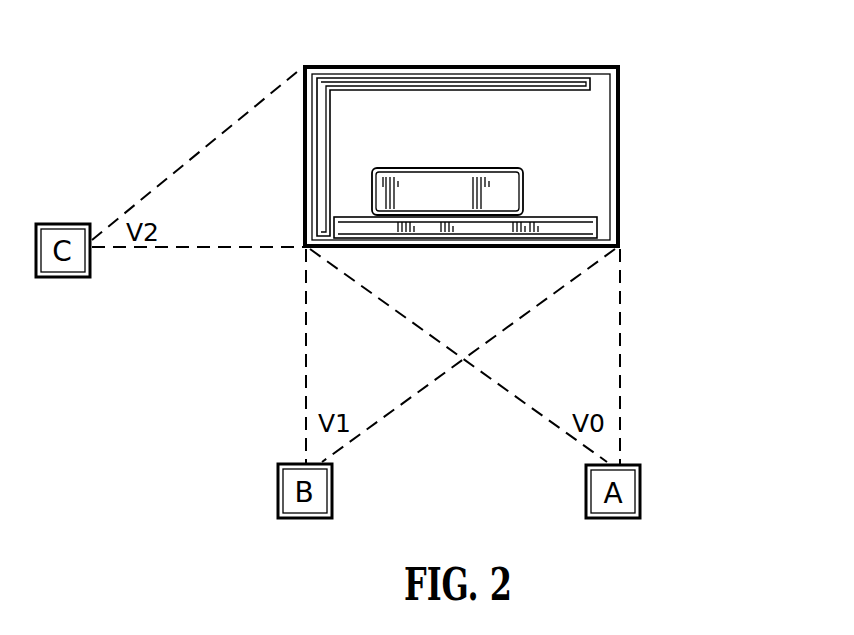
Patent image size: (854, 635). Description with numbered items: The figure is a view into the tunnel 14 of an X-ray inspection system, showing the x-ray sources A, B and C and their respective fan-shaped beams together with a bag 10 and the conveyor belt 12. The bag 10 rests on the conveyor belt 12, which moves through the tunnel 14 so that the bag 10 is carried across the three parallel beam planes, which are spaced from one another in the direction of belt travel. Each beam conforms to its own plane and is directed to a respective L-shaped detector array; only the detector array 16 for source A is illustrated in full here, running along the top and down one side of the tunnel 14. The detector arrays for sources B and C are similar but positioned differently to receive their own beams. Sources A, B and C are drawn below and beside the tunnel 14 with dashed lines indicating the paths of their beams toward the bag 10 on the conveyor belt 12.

The bag 10 is at (472, 167).
The conveyor belt 12 is at (590, 217).
The tunnel 14 is at (603, 64).
The detector array 16 is at (360, 83).